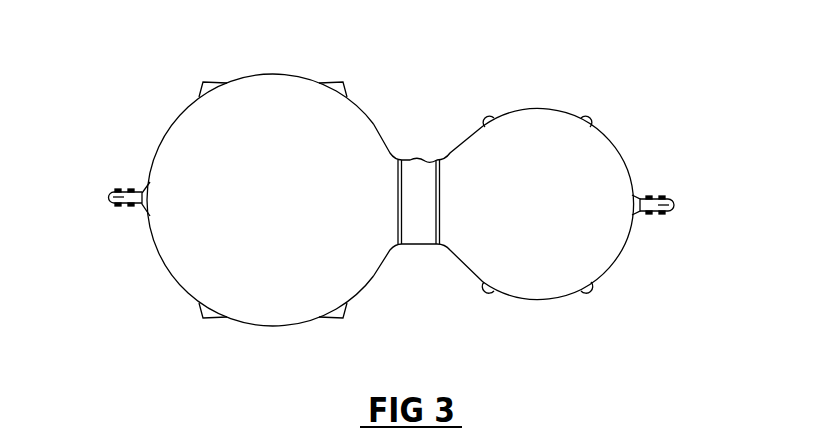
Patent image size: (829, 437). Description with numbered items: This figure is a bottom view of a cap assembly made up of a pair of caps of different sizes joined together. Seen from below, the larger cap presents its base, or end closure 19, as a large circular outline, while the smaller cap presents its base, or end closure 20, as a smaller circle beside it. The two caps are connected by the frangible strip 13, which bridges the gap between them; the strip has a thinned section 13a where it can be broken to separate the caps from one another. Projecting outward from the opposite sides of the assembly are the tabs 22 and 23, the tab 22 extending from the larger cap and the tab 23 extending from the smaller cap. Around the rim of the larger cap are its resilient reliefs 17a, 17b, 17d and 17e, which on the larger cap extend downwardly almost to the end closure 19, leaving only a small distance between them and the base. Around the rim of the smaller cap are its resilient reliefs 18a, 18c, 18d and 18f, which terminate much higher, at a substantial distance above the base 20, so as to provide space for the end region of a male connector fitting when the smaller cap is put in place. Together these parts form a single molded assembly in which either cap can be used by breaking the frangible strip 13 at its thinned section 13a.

The frangible strip 13 is at (415, 177).
The thinned section 13a is at (420, 225).
The resilient relief 17a is at (203, 82).
The resilient relief 17b is at (343, 82).
The resilient relief 17d is at (203, 318).
The resilient relief 17e is at (343, 318).
The resilient relief 18a is at (488, 118).
The resilient relief 18c is at (487, 288).
The resilient relief 18d is at (587, 288).
The resilient relief 18f is at (587, 120).
The end closure 19 is at (210, 153).
The end closure 20 is at (563, 208).
The tab 22 is at (110, 197).
The tab 23 is at (673, 205).